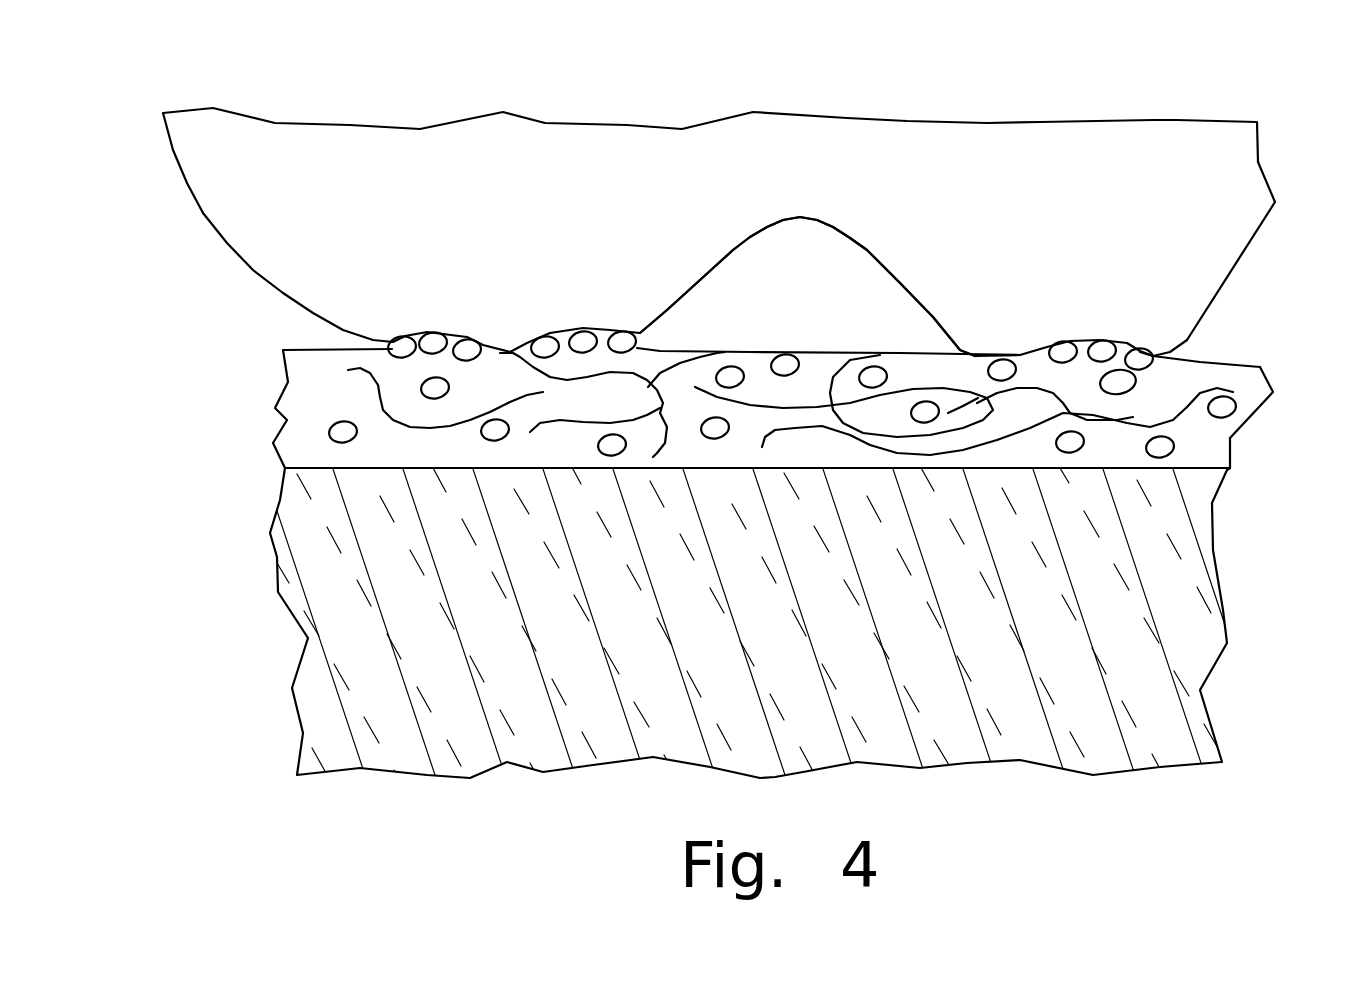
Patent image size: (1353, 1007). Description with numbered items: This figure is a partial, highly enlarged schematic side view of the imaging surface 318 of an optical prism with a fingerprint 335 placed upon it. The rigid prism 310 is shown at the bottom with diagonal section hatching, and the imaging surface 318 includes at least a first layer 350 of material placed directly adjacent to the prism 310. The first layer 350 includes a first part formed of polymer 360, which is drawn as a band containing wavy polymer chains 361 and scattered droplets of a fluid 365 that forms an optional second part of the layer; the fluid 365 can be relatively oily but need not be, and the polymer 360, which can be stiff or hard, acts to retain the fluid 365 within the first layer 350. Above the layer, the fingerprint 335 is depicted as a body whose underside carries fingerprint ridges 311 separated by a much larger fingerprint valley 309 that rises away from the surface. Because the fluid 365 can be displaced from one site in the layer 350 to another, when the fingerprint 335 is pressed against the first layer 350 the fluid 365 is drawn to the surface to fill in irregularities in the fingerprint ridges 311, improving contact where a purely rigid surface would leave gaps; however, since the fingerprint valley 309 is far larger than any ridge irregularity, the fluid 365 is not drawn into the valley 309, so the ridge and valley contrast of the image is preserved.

The fingerprint valley 309 is at (807, 205).
The prism 310 is at (805, 634).
The fingerprint ridges 311 is at (1100, 218).
The imaging surface 318 is at (815, 338).
The fingerprint 335 is at (719, 210).
The first layer 350 is at (695, 450).
The polymer 360 is at (803, 409).
The polymer chains 361 is at (364, 398).
The fluid 365 is at (420, 334).